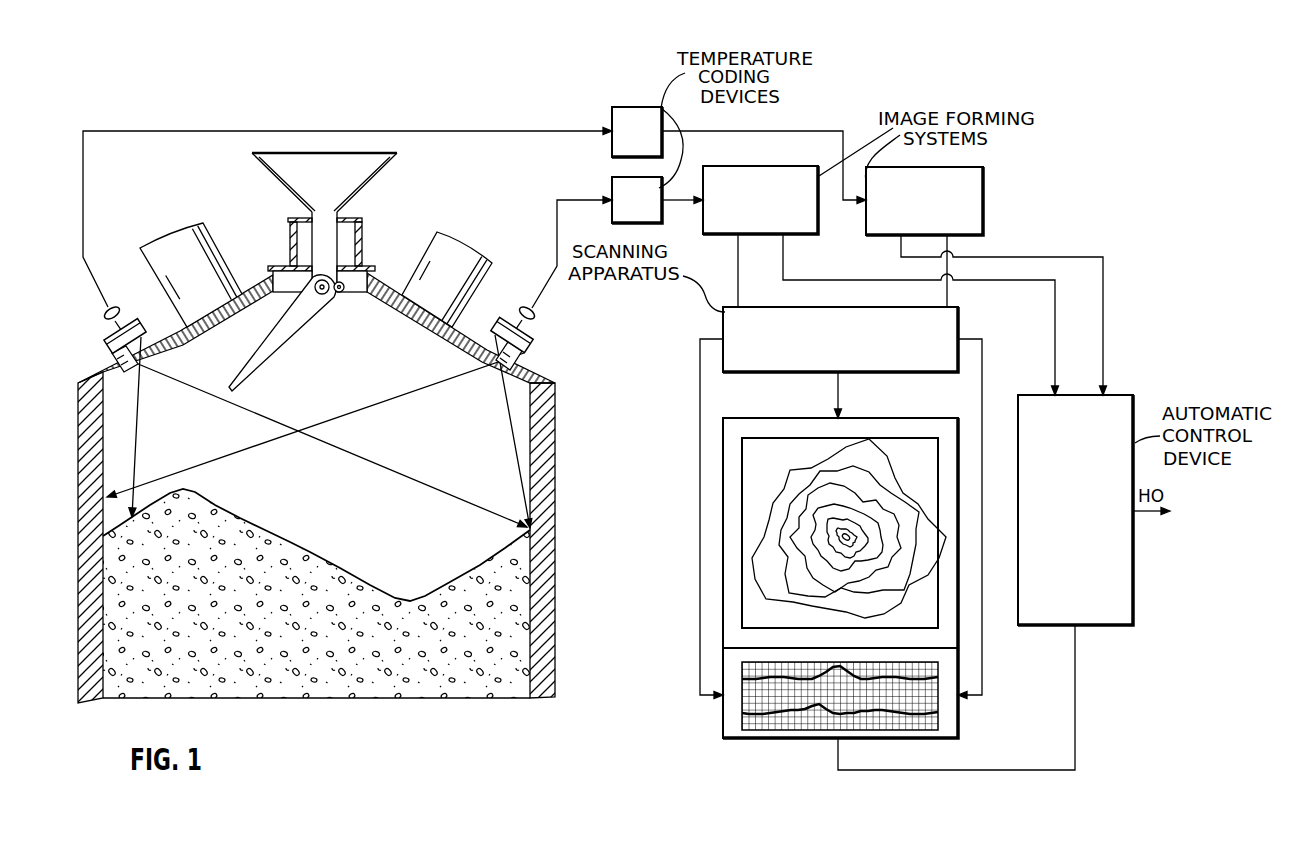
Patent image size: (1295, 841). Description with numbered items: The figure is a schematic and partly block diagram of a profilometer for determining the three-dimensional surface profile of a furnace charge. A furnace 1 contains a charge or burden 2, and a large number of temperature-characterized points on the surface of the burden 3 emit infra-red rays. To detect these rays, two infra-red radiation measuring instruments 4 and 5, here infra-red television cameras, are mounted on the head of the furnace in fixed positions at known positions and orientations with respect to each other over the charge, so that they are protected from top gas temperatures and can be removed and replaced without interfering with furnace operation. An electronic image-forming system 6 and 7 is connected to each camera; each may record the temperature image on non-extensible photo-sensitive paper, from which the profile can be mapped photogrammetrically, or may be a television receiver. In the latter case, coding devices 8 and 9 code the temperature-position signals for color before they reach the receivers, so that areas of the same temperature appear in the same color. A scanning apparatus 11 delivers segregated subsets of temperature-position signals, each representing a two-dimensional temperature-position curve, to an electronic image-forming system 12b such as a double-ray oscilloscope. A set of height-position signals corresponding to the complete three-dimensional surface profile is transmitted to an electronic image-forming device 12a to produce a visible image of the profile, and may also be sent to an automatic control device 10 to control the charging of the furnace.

The furnace 1 is at (76, 492).
The charge or burden 2 is at (311, 696).
The surface of the burden 3 is at (298, 543).
The infra-red radiation measuring instrument 4 is at (101, 339).
The infra-red radiation measuring instrument 5 is at (534, 343).
The electronic image-forming system 6 is at (753, 211).
The electronic image-forming system 7 is at (917, 212).
The coding device 8 is at (613, 181).
The coding device 9 is at (611, 112).
The automatic control device 10 is at (1058, 511).
The scanning apparatus 11 is at (831, 350).
The electronic image-forming device 12a is at (777, 420).
The electronic image-forming system 12b is at (780, 742).